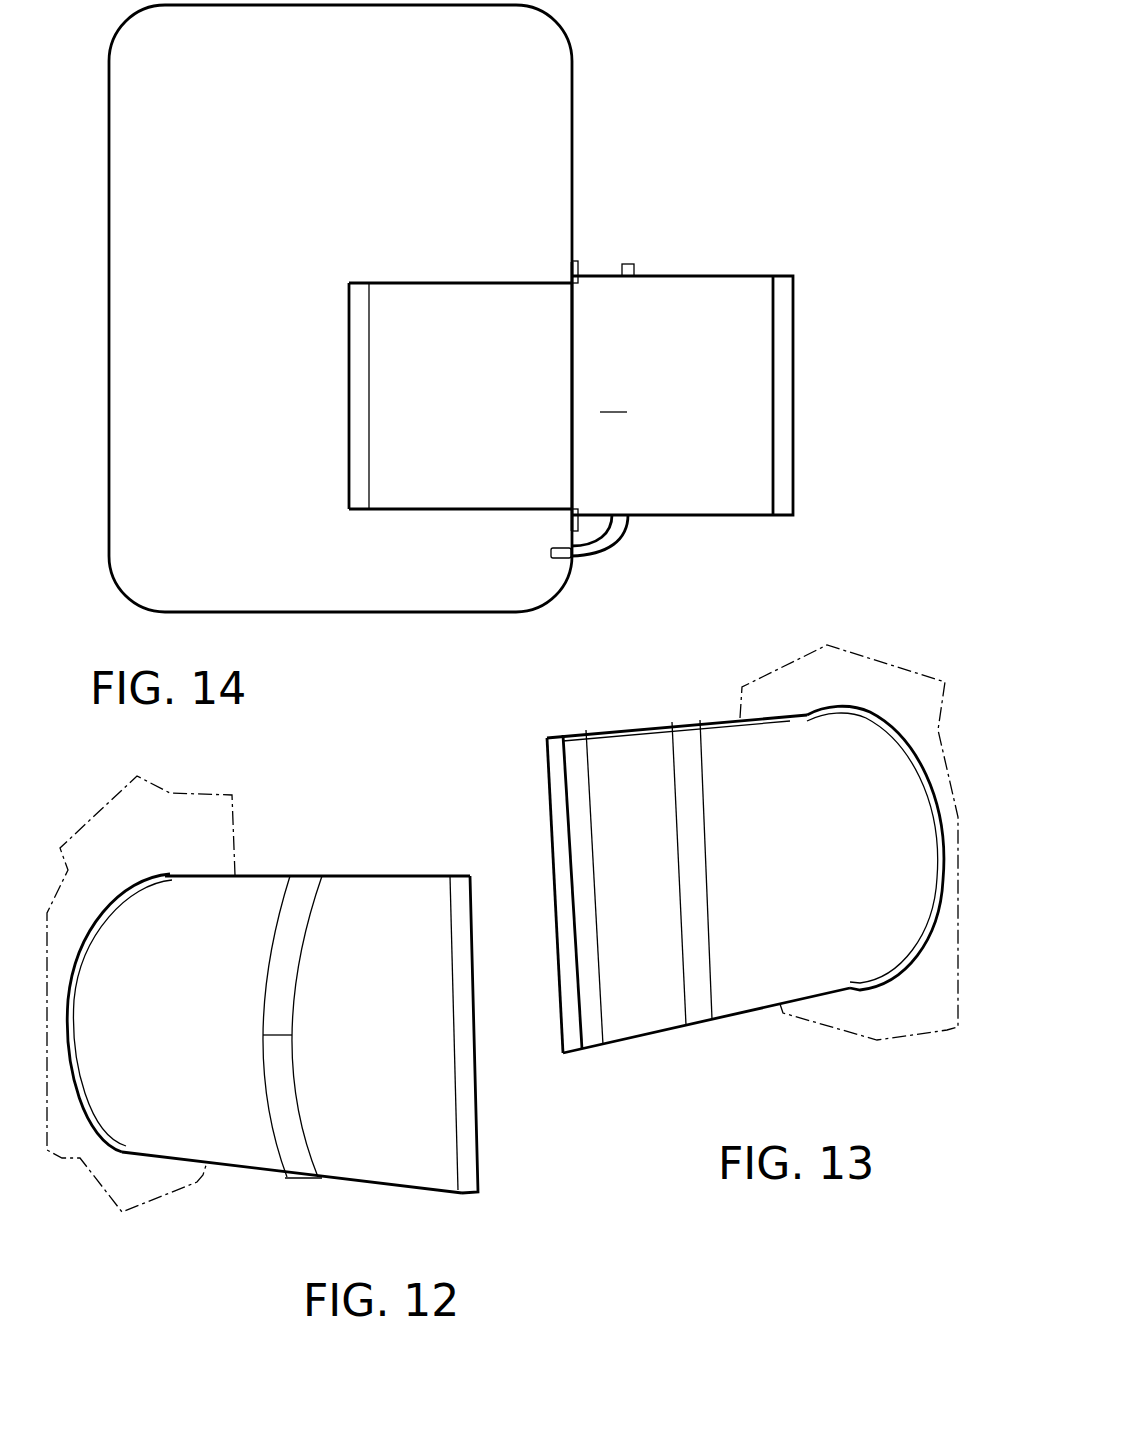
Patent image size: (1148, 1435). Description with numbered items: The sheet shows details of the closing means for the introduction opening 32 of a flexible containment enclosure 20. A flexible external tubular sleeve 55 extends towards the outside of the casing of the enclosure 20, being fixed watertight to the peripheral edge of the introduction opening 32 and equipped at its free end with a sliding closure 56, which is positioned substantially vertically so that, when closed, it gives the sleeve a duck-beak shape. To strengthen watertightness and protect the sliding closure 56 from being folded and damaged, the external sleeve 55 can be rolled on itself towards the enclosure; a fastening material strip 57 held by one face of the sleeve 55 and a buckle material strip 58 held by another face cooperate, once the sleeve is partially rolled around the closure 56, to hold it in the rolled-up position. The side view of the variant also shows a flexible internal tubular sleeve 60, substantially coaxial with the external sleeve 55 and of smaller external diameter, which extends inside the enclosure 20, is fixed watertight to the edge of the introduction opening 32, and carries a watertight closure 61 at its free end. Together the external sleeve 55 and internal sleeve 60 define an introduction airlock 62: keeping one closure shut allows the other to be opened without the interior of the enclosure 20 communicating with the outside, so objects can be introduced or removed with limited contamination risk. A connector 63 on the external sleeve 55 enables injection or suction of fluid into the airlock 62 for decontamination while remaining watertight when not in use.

In FIG. 14, the flexible containment enclosure 20 is at (580, 105).
In FIG. 12, the flexible containment enclosure 20 is at (130, 1183).
In FIG. 14, the introduction opening 32 is at (578, 270).
In FIG. 12, the introduction opening 32 is at (82, 1110).
In FIG. 14, the external tubular sleeve 55 is at (717, 482).
In FIG. 12, the external tubular sleeve 55 is at (405, 905).
In FIG. 13, the external tubular sleeve 55 is at (800, 930).
In FIG. 14, the sliding closure 56 is at (783, 401).
In FIG. 12, the sliding closure 56 is at (468, 1152).
In FIG. 13, the sliding closure 56 is at (568, 968).
In FIG. 12, the fastening material strip 57 is at (300, 895).
In FIG. 13, the buckle material strip 58 is at (703, 1007).
In FIG. 14, the internal tubular sleeve 60 is at (457, 505).
In FIG. 14, the watertight closure 61 is at (340, 483).
In FIG. 14, the introduction airlock 62 is at (603, 548).
In FIG. 14, the connector 63 is at (634, 270).